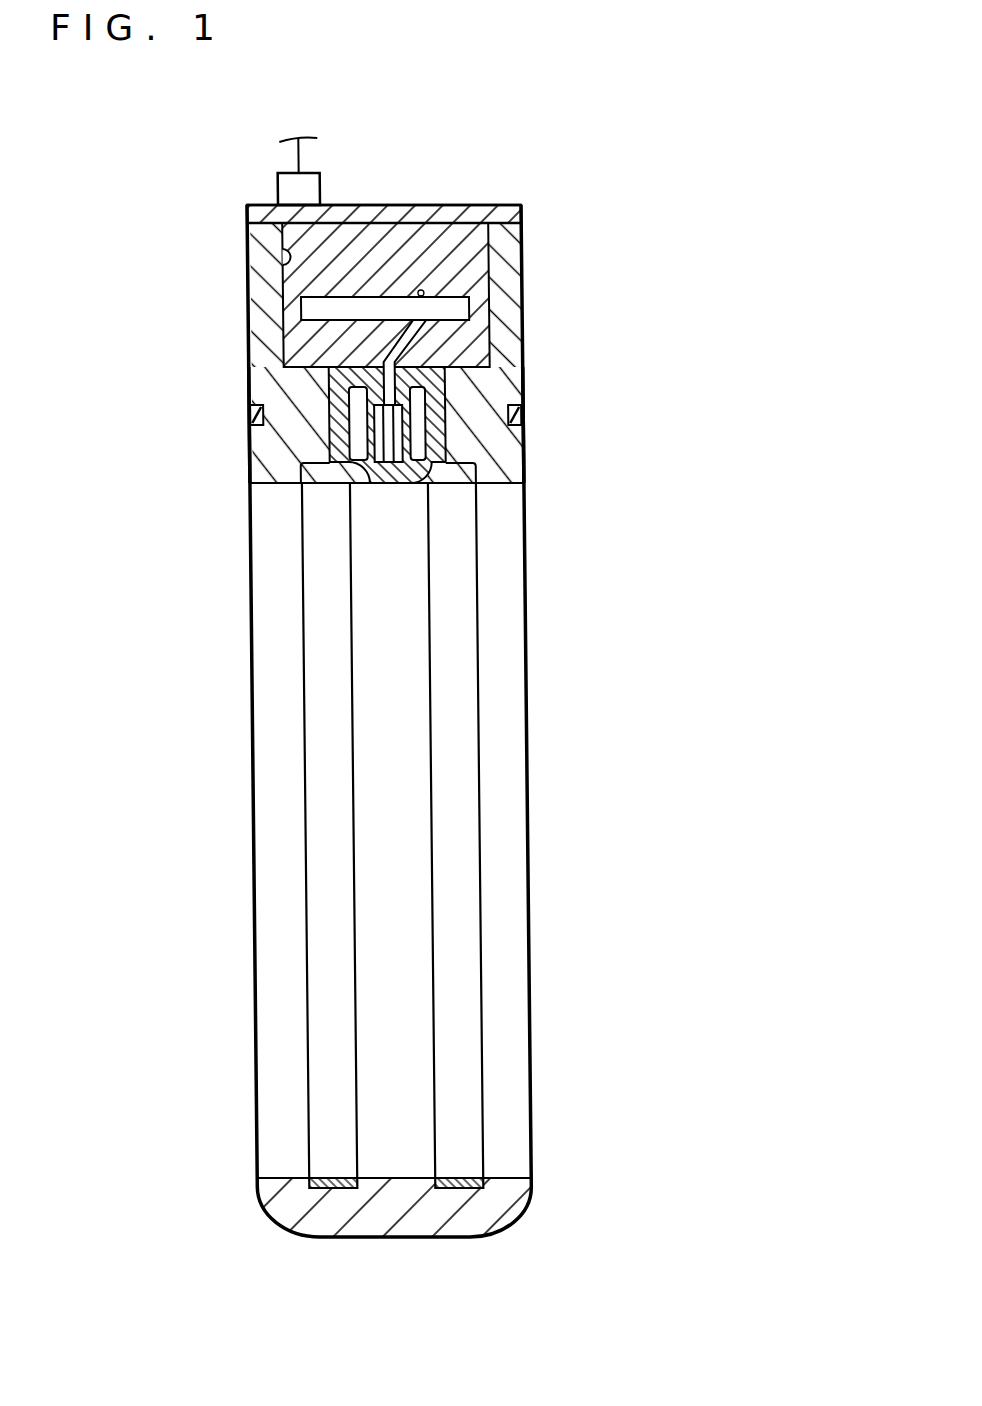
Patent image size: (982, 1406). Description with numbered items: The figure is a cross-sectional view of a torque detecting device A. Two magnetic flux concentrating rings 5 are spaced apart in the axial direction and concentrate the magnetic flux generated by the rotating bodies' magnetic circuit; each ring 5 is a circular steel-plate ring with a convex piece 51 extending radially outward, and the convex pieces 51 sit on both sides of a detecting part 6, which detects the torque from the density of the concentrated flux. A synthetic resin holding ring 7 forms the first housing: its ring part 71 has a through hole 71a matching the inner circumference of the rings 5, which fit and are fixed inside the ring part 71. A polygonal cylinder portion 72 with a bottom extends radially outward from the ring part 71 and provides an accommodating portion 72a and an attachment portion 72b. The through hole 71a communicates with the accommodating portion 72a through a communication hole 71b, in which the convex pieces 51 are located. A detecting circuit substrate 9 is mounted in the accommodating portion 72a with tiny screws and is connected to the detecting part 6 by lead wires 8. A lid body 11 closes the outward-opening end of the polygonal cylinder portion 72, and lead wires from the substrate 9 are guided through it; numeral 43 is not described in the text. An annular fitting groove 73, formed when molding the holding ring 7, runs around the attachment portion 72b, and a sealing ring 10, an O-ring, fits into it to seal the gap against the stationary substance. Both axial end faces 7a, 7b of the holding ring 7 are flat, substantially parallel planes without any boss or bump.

The torque detecting device A is at (496, 189).
The magnetic flux concentrating ring 5 is at (325, 483).
The detecting part 6 is at (345, 461).
The holding ring 7 is at (523, 262).
The end face 7a is at (248, 448).
The end face 7b is at (525, 447).
The lead wire 8 is at (300, 313).
The detecting circuit substrate 9 is at (346, 290).
The sealing ring 10 is at (525, 418).
The lid body 11 is at (442, 207).
The opening 43 is at (412, 225).
The convex piece 51 is at (335, 396).
The ring part 71 is at (373, 1237).
The through hole 71a is at (393, 1178).
The communication hole 71b is at (325, 383).
The polygonal cylinder portion 72 is at (515, 235).
The accommodating portion 72a is at (282, 266).
The attachment portion 72b is at (510, 310).
The fitting groove 73 is at (523, 407).